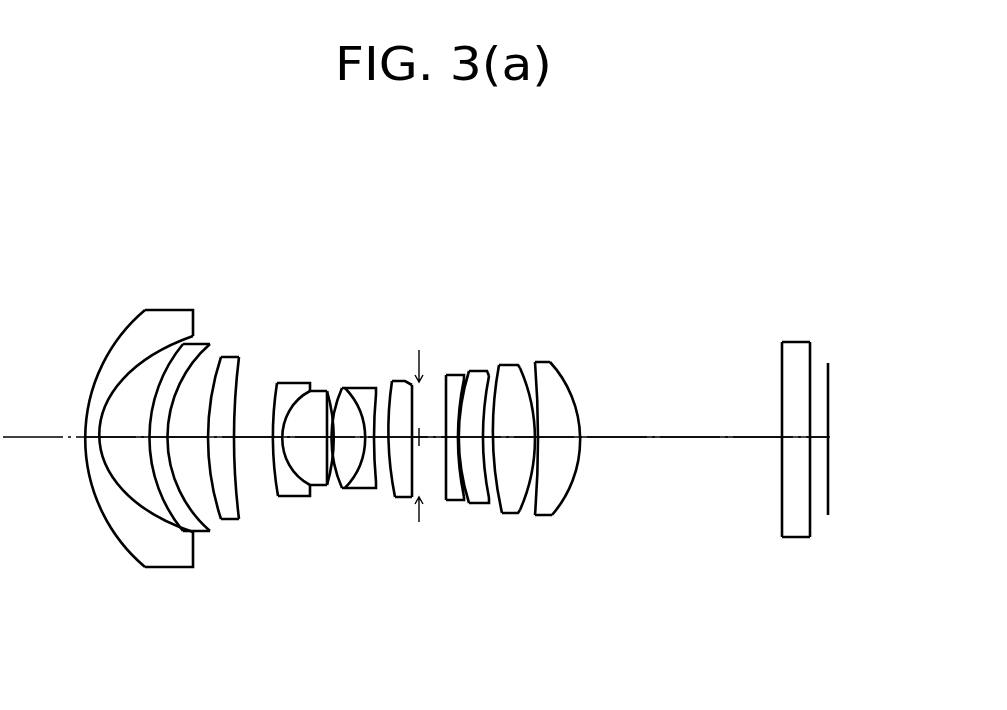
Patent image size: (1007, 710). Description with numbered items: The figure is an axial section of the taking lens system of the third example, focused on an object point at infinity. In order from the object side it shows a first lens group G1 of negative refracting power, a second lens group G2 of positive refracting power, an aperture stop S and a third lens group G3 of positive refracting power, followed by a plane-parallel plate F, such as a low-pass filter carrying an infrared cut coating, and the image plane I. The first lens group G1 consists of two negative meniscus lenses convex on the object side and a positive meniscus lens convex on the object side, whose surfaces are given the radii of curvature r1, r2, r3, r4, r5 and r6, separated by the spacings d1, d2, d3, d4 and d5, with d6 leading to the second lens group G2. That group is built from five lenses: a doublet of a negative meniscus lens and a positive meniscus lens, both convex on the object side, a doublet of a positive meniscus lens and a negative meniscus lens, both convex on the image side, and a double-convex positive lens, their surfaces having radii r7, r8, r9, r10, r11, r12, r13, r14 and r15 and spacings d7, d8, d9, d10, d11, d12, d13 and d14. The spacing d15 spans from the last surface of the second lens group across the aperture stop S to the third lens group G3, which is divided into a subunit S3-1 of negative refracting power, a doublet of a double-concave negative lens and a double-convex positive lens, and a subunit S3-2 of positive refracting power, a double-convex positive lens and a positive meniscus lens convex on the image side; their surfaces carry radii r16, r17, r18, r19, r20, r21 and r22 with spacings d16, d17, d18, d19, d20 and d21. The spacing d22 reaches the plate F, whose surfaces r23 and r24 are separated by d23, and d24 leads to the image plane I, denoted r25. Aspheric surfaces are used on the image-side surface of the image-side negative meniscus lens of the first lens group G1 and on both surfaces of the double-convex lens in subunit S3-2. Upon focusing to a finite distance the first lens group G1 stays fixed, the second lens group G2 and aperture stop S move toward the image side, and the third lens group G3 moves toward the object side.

The first lens group G1 is at (82, 190).
The second lens group G2 is at (269, 190).
The third lens group G3 is at (577, 190).
The aperture stop S is at (426, 190).
The subunit of negative refracting power S3-1 is at (438, 250).
The subunit of positive refracting power S3-2 is at (491, 250).
The plane-parallel plate F is at (798, 537).
The image plane I is at (828, 417).
The radius of curvature of lens surface r1 is at (115, 340).
The radius of curvature of lens surface r2 is at (152, 347).
The radius of curvature of lens surface r3 is at (170, 360).
The radius of curvature of lens surface r4 is at (197, 367).
The radius of curvature of lens surface r5 is at (218, 365).
The radius of curvature of lens surface r6 is at (245, 368).
The radius of curvature of lens surface r7 is at (273, 390).
The radius of curvature of lens surface r8 is at (293, 398).
The radius of curvature of lens surface r9 is at (322, 403).
The radius of curvature of lens surface r10 is at (329, 403).
The radius of curvature of lens surface r11 is at (343, 400).
The radius of curvature of lens surface r12 is at (368, 393).
The radius of curvature of lens surface r13 is at (378, 393).
The radius of curvature of lens surface r14 is at (392, 381).
The radius of curvature of lens surface r15 is at (414, 381).
The radius of curvature of lens surface r16 is at (445, 375).
The radius of curvature of lens surface r17 is at (466, 372).
The radius of curvature of lens surface r18 is at (486, 372).
The radius of curvature of lens surface r19 is at (498, 366).
The radius of curvature of lens surface r20 is at (518, 365).
The radius of curvature of lens surface r21 is at (542, 360).
The radius of curvature of lens surface r22 is at (568, 370).
The radius of curvature of lens surface r23 is at (780, 360).
The radius of curvature of lens surface r24 is at (808, 360).
The radius of curvature of lens surface r25 is at (828, 373).
The spacing between adjacent lens surfaces d1 is at (90, 442).
The spacing between adjacent lens surfaces d2 is at (127, 456).
The spacing between adjacent lens surfaces d3 is at (168, 450).
The spacing between adjacent lens surfaces d4 is at (213, 465).
The spacing between adjacent lens surfaces d5 is at (232, 490).
The spacing between adjacent lens surfaces d6 is at (253, 456).
The spacing between adjacent lens surfaces d7 is at (287, 490).
The spacing between adjacent lens surfaces d8 is at (304, 455).
The spacing between adjacent lens surfaces d9 is at (327, 490).
The spacing between adjacent lens surfaces d10 is at (333, 487).
The spacing between adjacent lens surfaces d11 is at (362, 488).
The spacing between adjacent lens surfaces d12 is at (383, 490).
The spacing between adjacent lens surfaces d13 is at (392, 495).
The spacing between adjacent lens surfaces d14 is at (408, 498).
The spacing between adjacent lens surfaces d15 is at (432, 445).
The spacing between adjacent lens surfaces d16 is at (462, 503).
The spacing between adjacent lens surfaces d17 is at (477, 503).
The spacing between adjacent lens surfaces d18 is at (500, 512).
The spacing between adjacent lens surfaces d19 is at (514, 457).
The spacing between adjacent lens surfaces d20 is at (532, 512).
The spacing between adjacent lens surfaces d21 is at (565, 507).
The spacing between adjacent lens surfaces d22 is at (681, 457).
The spacing between adjacent lens surfaces d23 is at (792, 438).
The spacing between adjacent lens surfaces d24 is at (820, 440).